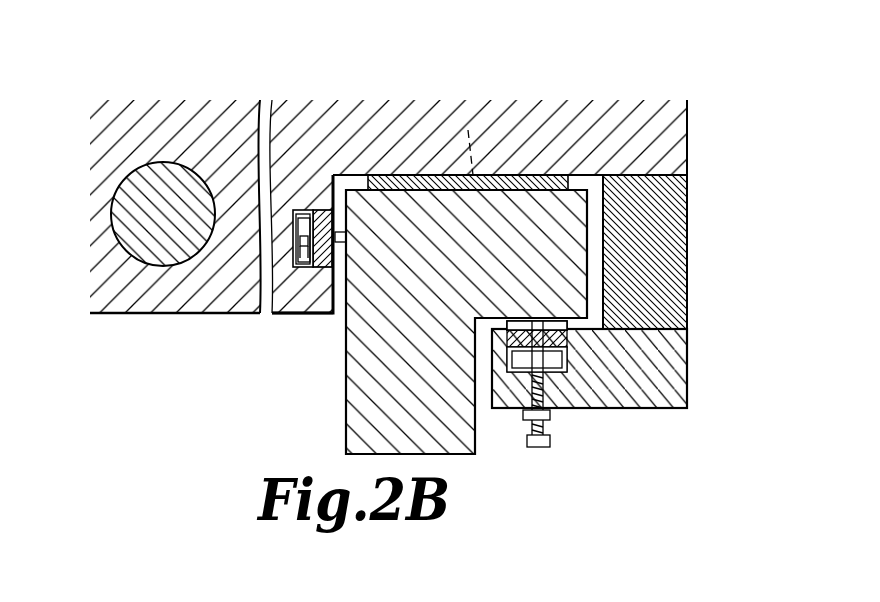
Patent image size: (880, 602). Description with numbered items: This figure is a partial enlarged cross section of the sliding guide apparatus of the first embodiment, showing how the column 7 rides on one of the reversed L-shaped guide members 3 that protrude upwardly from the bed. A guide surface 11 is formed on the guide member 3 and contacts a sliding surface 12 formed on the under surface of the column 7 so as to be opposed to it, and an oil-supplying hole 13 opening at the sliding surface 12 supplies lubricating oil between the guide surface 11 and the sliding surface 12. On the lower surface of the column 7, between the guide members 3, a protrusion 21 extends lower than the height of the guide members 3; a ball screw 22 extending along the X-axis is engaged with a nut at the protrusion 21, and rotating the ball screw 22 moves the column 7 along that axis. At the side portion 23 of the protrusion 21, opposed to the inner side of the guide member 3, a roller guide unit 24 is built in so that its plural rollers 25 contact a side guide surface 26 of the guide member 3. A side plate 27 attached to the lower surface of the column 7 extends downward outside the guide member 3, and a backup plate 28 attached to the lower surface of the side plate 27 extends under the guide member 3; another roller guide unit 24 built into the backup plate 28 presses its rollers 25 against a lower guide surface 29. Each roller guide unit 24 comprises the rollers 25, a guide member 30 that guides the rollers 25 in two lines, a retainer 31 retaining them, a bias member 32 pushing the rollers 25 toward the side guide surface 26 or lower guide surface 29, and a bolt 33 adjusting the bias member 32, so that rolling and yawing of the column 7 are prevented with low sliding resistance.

The guide member 3 is at (538, 255).
The column 7 is at (148, 88).
The guide surface 11 is at (580, 185).
The sliding surface 12 is at (420, 175).
The oil-supplying hole 13 is at (468, 130).
The protrusion 21 is at (130, 315).
The ball screw 22 is at (127, 210).
The side portion 23 is at (340, 178).
The roller guide unit 24 is at (293, 243).
The roller 25 is at (300, 250).
The side guide surface 26 is at (338, 190).
The side plate 27 is at (688, 222).
The backup plate 28 is at (687, 402).
The lower guide surface 29 is at (603, 327).
The guide member 30 is at (312, 268).
The retainer 31 is at (305, 263).
The bias member 32 is at (300, 210).
The bolt 33 is at (540, 450).